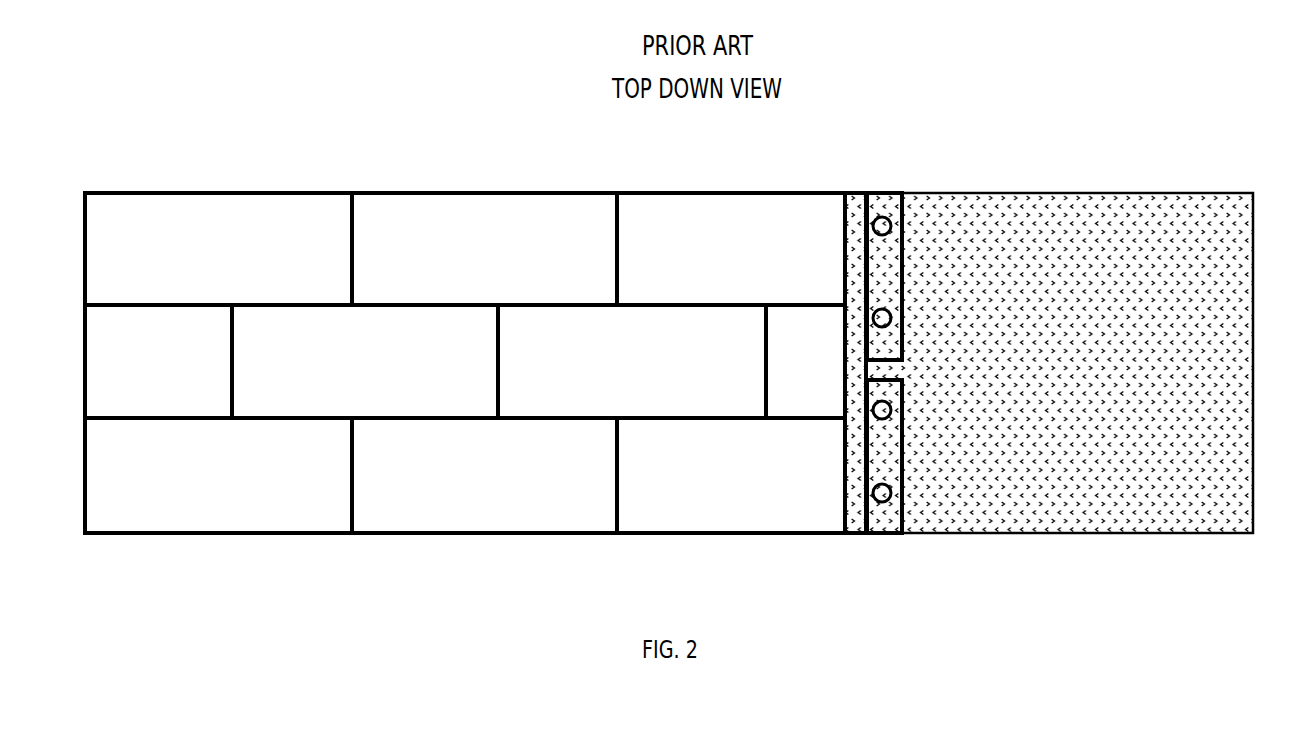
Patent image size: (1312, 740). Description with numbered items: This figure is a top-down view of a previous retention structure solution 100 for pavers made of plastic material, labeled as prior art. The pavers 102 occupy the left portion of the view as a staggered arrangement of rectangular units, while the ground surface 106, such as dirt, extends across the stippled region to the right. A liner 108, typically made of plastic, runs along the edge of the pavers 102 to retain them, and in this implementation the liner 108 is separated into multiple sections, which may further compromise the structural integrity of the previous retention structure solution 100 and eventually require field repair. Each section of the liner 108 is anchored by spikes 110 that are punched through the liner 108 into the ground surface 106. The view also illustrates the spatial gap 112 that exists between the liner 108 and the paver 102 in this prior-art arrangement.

The previous retention structure solution 100 is at (1040, 92).
The pavers 102 is at (164, 212).
The ground surface 106 is at (1133, 218).
The liner 108 is at (903, 192).
The spike 110 is at (884, 217).
The spatial gap 112 is at (861, 193).